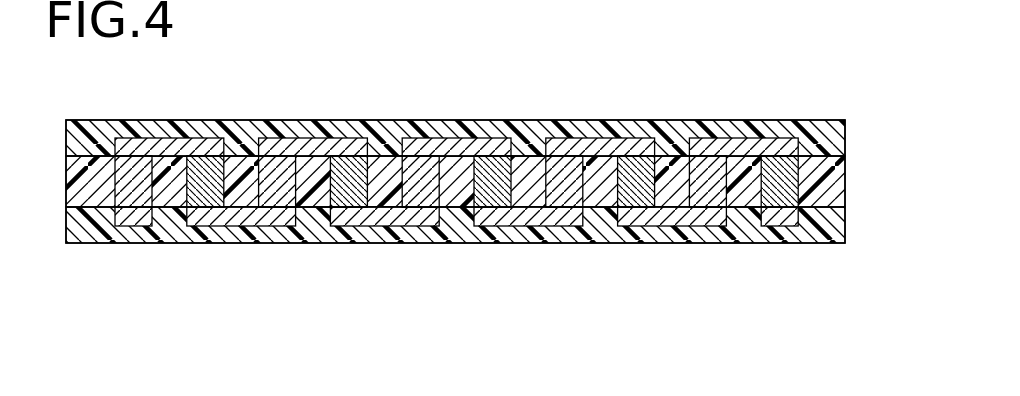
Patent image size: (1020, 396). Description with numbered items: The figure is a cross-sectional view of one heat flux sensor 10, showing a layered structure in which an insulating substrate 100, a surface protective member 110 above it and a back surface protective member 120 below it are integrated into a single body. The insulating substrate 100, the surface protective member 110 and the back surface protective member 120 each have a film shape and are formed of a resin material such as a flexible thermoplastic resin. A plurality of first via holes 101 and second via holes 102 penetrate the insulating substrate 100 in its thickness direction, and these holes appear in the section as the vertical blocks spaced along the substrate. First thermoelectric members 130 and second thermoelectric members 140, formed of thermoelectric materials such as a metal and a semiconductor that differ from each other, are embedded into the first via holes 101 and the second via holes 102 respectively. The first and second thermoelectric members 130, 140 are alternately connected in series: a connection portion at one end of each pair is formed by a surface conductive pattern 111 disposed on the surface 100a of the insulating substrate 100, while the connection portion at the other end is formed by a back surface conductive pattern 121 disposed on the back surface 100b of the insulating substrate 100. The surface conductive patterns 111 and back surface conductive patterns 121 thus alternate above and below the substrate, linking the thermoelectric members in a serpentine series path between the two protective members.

The heat flux sensor 10 is at (326, 96).
The insulating substrate 100 is at (835, 182).
The surface of the insulating substrate 100a is at (93, 154).
The back surface of the insulating substrate 100b is at (72, 209).
The first via hole 101 is at (703, 198).
The second via hole 102 is at (773, 188).
The surface protective member 110 is at (818, 142).
The surface conductive pattern 111 is at (760, 146).
The back surface protective member 120 is at (827, 237).
The back surface conductive pattern 121 is at (650, 221).
The first thermoelectric member 130 is at (715, 209).
The second thermoelectric member 140 is at (790, 188).